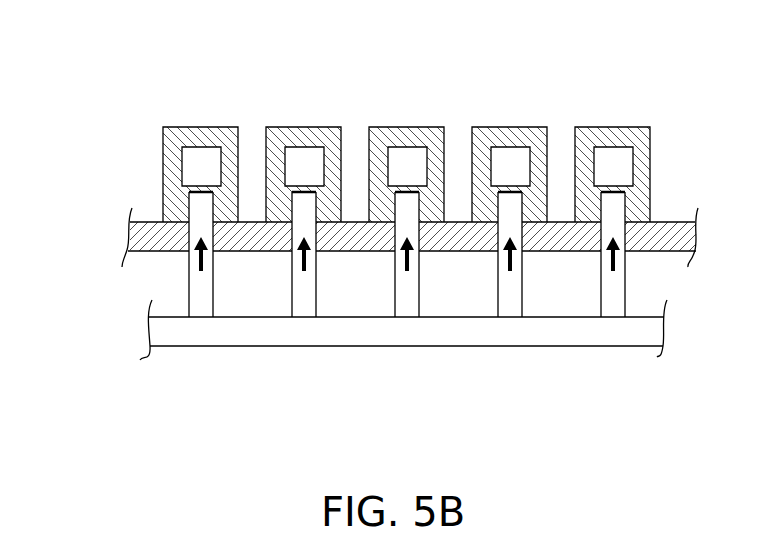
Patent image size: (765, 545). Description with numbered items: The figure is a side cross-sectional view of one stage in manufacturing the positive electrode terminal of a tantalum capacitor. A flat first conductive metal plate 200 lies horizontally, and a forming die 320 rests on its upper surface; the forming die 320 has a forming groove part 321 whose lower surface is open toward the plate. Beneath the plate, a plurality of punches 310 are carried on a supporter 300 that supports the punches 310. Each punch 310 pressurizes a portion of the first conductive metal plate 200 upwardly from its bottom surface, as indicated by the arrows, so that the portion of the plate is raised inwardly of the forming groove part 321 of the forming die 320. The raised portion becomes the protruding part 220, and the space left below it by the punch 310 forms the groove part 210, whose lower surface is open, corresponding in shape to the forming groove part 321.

The first conductive metal plate 200 is at (140, 238).
The groove part 210 is at (190, 200).
The protruding part 220 is at (199, 186).
The supporter 300 is at (250, 335).
The punch 310 is at (197, 287).
The forming die 320 is at (387, 122).
The forming groove part 321 is at (228, 150).